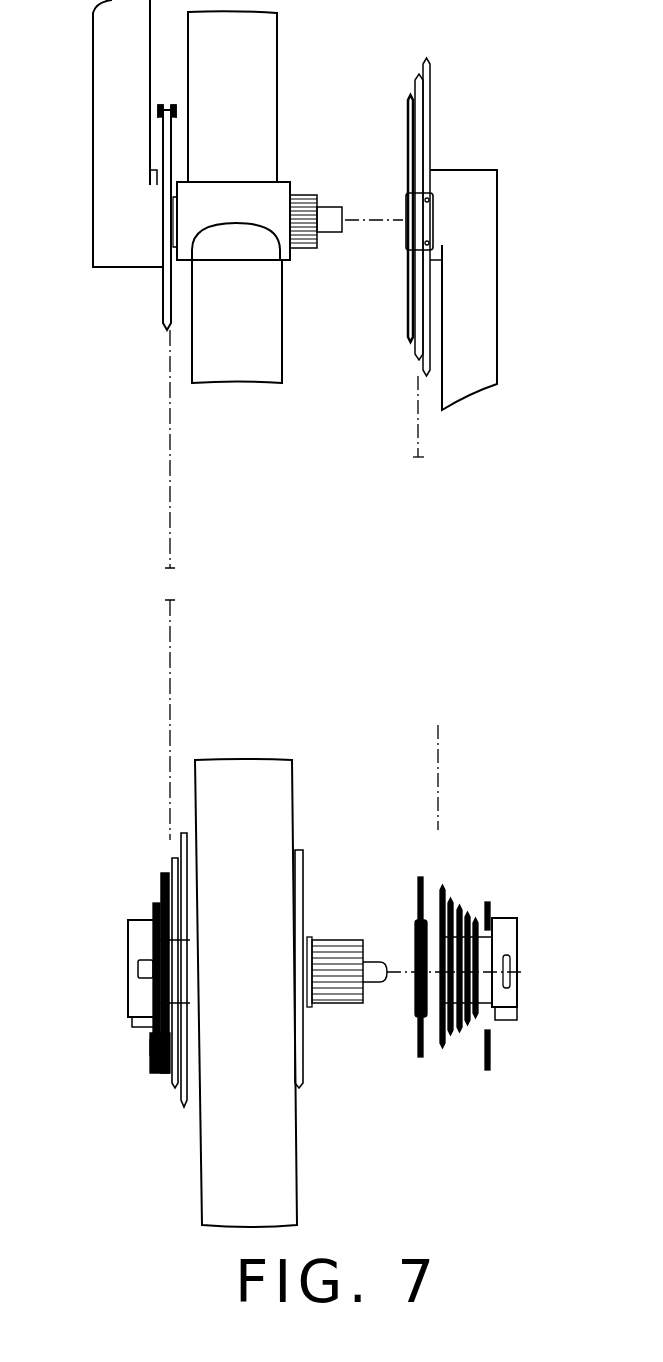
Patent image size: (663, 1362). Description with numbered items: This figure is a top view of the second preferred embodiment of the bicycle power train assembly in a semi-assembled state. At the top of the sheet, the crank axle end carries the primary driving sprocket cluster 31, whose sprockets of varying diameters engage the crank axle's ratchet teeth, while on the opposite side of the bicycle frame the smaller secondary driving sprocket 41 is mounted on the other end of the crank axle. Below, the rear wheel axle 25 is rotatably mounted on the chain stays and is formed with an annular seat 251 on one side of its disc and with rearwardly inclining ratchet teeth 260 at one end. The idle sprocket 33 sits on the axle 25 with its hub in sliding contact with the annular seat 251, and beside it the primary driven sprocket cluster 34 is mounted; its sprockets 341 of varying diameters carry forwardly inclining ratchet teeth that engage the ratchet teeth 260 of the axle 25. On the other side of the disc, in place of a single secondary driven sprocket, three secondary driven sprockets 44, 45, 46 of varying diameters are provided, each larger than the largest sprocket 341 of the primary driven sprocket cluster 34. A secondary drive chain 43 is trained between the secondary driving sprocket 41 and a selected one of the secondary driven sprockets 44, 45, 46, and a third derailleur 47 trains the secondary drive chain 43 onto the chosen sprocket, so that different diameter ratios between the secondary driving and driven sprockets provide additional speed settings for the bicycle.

The rear wheel axle 25 is at (378, 963).
The annular seat 251 is at (308, 940).
The ratchet teeth 260 is at (333, 950).
The primary driving sprocket cluster 31 is at (430, 89).
The idle sprocket 33 is at (422, 880).
The primary driven sprocket cluster 34 is at (468, 910).
The sprockets 341 is at (447, 1030).
The secondary driving sprocket 41 is at (163, 295).
The secondary drive chain 43 is at (172, 688).
The secondary driven sprocket 44 is at (160, 887).
The secondary driven sprocket 45 is at (171, 868).
The secondary driven sprocket 46 is at (180, 833).
The third derailleur 47 is at (147, 998).